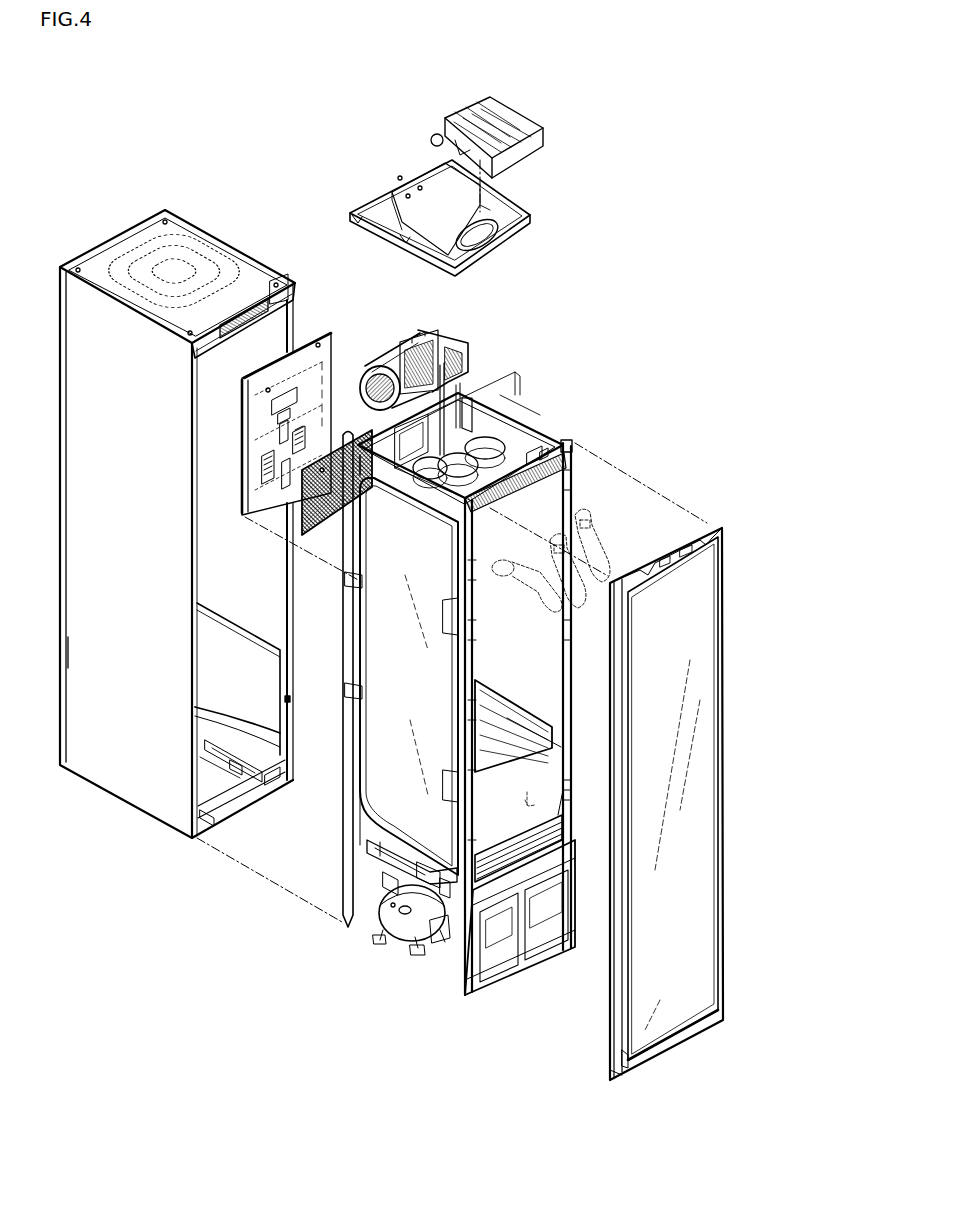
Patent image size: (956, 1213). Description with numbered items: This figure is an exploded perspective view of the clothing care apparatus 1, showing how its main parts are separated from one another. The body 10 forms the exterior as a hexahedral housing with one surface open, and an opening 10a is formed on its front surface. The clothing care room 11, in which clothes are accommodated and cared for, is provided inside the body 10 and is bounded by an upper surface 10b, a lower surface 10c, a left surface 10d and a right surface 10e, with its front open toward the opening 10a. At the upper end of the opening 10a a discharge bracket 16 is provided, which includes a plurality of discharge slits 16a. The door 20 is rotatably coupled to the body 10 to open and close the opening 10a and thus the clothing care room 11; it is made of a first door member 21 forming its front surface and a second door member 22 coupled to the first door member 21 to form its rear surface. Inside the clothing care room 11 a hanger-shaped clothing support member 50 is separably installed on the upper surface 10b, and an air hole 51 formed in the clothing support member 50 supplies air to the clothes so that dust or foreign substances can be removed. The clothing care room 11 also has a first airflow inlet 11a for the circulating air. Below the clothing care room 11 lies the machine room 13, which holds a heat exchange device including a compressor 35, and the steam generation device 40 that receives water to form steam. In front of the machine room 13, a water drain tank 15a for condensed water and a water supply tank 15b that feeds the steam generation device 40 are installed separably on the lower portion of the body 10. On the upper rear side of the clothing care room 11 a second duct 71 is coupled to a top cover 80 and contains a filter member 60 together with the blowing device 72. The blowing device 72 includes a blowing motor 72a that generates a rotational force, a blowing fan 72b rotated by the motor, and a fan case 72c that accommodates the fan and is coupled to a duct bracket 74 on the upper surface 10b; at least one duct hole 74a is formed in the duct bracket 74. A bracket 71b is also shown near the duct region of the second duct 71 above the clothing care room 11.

The clothing care apparatus 1 is at (326, 75).
The body 10 is at (202, 220).
The opening 10a is at (286, 333).
The upper surface 10b is at (563, 446).
The lower surface 10c is at (531, 817).
The left surface 10d is at (374, 620).
The right surface 10e is at (545, 693).
The clothing care room 11 is at (534, 633).
The first airflow inlet 11a is at (493, 852).
The machine room 13 is at (380, 882).
The water drain tank 15a is at (507, 952).
The water supply tank 15b is at (552, 925).
The discharge bracket 16 is at (296, 290).
The discharge slits 16a is at (252, 302).
The door 20 is at (663, 771).
The first door member 21 is at (708, 620).
The second door member 22 is at (613, 1028).
The compressor 35 is at (405, 932).
The steam generation device 40 is at (376, 870).
The clothing support member 50 is at (581, 551).
The air hole 51 is at (615, 546).
The filter member 60 is at (311, 530).
The second duct 71 is at (260, 405).
The bracket 71b is at (524, 440).
The blowing device 72 is at (446, 345).
The blowing motor 72a is at (402, 342).
The blowing fan 72b is at (383, 364).
The fan case 72c is at (443, 334).
The duct bracket 74 is at (470, 406).
The duct hole 74a is at (466, 424).
The top cover 80 is at (528, 205).